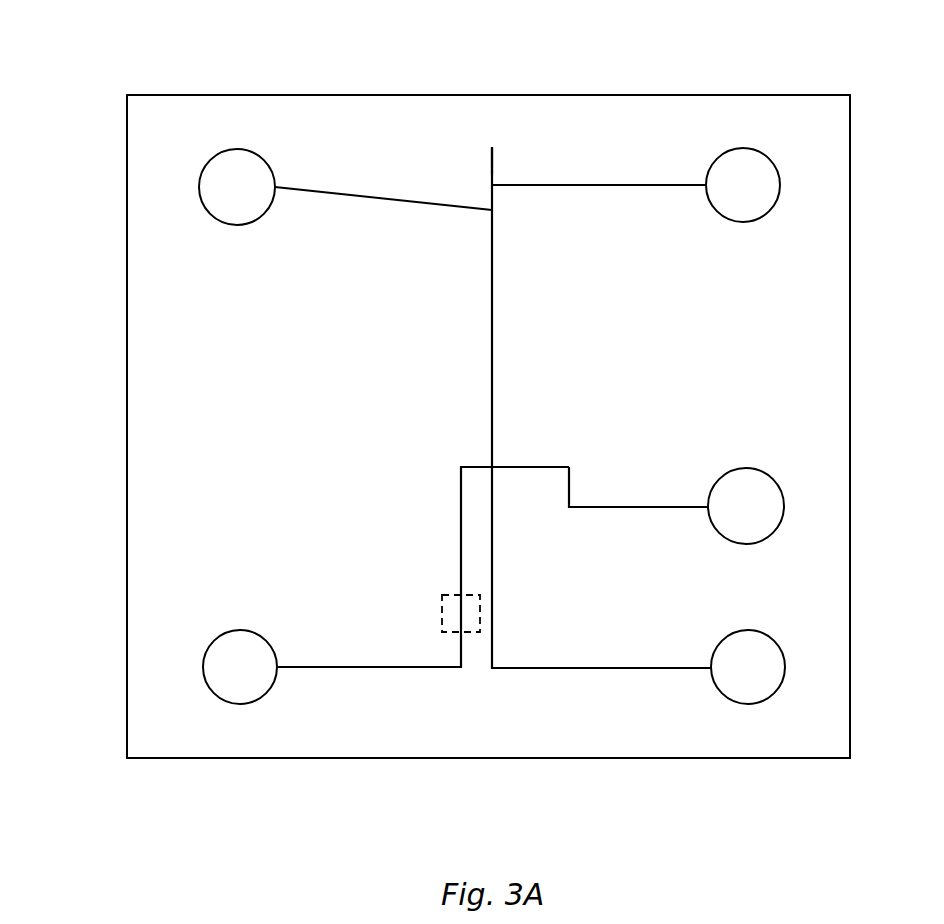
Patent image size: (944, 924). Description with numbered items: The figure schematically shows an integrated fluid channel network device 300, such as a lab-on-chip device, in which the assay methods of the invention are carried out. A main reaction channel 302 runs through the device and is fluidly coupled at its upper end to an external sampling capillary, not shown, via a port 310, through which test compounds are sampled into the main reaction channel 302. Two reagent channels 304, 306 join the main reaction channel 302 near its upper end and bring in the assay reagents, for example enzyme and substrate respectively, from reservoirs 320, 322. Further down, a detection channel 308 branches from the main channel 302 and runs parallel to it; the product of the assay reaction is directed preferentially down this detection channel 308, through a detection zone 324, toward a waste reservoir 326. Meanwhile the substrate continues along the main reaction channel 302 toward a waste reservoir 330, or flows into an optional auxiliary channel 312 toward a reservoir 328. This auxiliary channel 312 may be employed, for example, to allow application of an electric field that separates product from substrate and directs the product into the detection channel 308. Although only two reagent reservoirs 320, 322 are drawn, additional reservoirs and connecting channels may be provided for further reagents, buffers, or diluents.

The device 300 is at (155, 66).
The main reaction channel 302 is at (490, 331).
The reagent channel 304 is at (391, 197).
The reagent channel 306 is at (623, 187).
The detection channel 308 is at (458, 523).
The port 310 is at (494, 148).
The auxiliary channel 312 is at (620, 500).
The reservoir 320 is at (237, 187).
The reservoir 322 is at (743, 185).
The detection zone 324 is at (443, 614).
The waste reservoir 326 is at (240, 667).
The reservoir 328 is at (746, 506).
The waste reservoir 330 is at (748, 667).